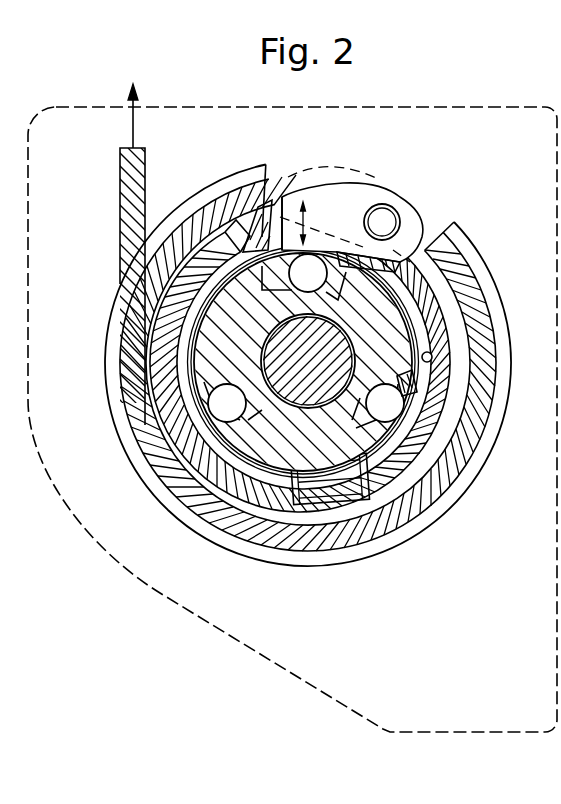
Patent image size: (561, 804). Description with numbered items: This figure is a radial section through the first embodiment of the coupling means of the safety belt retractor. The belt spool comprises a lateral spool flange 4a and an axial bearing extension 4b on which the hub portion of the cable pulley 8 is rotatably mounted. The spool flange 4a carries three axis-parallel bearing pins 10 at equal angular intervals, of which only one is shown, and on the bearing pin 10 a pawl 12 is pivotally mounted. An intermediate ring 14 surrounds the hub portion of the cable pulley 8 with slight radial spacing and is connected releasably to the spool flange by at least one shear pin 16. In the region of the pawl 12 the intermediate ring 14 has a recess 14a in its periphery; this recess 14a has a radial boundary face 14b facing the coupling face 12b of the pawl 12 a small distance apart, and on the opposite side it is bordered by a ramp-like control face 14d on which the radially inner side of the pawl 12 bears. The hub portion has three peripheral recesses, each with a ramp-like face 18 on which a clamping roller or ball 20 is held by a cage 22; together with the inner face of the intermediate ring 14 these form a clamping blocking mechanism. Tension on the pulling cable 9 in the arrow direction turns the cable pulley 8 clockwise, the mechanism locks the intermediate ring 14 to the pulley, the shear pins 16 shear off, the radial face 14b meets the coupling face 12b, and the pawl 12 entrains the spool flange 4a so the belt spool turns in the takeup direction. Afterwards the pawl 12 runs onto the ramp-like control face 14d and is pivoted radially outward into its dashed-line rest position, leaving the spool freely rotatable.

The spool flange 4a is at (420, 272).
The axial bearing extension 4b is at (330, 418).
The cable pulley 8 is at (277, 428).
The pulling cable 9 is at (120, 176).
The bearing pin 10 is at (391, 221).
The pawl 12 is at (344, 195).
The coupling face 12b is at (277, 215).
The intermediate ring 14 is at (423, 312).
The recess 14a is at (262, 207).
The radial boundary face 14b is at (247, 227).
The ramp-like control face 14d is at (353, 238).
The shear pin 16 is at (433, 357).
The ramp-like face 18 is at (262, 268).
The clamping roller 20 is at (395, 408).
The cage 22 is at (405, 388).